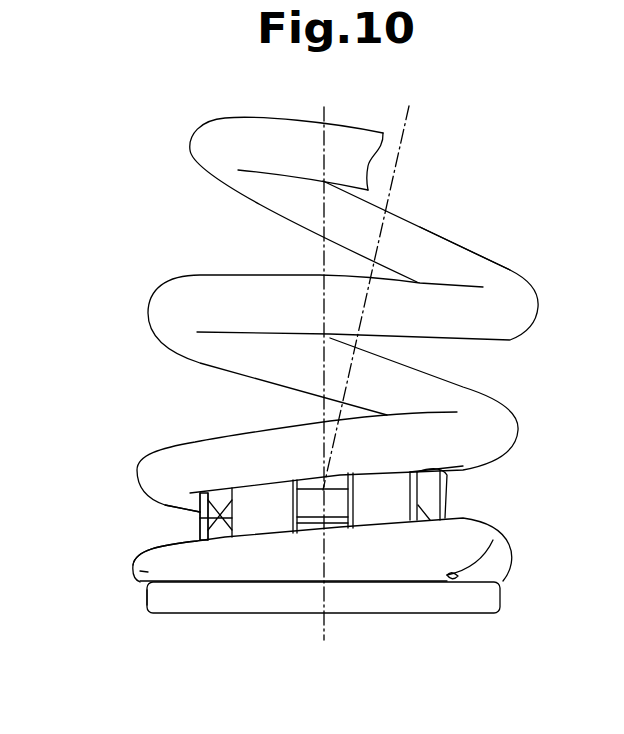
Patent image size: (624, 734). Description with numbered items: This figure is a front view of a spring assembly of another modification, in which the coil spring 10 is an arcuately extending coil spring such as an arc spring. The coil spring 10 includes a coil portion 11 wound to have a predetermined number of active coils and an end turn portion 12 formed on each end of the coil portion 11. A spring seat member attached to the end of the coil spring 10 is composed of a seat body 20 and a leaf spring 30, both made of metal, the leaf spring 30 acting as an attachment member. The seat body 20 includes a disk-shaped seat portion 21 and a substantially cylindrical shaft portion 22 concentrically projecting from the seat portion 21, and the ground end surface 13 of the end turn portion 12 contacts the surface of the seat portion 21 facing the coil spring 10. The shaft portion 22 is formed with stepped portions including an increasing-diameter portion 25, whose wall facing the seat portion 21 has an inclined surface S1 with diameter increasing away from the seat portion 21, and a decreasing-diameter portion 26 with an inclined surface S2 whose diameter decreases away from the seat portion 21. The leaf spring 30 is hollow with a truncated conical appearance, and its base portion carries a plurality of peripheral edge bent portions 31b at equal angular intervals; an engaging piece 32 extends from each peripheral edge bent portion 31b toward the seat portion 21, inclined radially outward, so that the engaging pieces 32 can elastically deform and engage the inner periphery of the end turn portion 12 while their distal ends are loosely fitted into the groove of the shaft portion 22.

The coil spring 10 is at (534, 247).
The coil portion 11 is at (471, 330).
The end turn portion 12 is at (135, 580).
The ground end surface 13 is at (170, 585).
The seat body 20 is at (292, 623).
The seat portion 21 is at (383, 602).
The shaft portion 22 is at (193, 520).
The increasing-diameter portion 25 is at (163, 552).
The decreasing-diameter portion 26 is at (200, 513).
The leaf spring 30 is at (475, 510).
The peripheral edge bent portion 31b is at (463, 466).
The engaging piece 32 is at (447, 492).